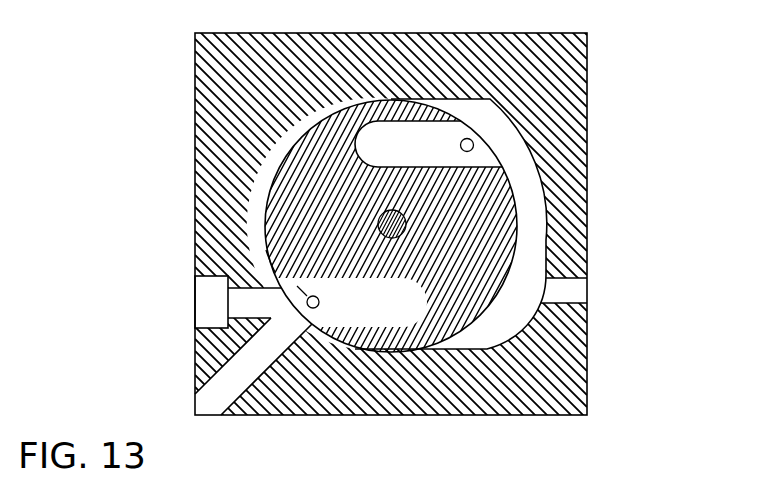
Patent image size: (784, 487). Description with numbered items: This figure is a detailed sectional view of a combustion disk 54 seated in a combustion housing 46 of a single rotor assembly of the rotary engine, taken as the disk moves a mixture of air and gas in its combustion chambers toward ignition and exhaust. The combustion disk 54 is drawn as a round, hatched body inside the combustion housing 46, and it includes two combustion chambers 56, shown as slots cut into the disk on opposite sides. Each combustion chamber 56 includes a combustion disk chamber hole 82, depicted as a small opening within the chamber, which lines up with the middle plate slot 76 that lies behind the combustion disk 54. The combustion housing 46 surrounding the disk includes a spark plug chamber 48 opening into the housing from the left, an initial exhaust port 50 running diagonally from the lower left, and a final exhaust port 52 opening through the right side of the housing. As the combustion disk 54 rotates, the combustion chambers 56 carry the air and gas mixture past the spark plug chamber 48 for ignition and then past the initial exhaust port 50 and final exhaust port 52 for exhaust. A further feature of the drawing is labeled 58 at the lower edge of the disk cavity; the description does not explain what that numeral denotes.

The combustion housing 46 is at (587, 113).
The spark plug chamber 48 is at (208, 305).
The initial exhaust port 50 is at (218, 398).
The final exhaust port 52 is at (587, 287).
The combustion disk 54 is at (492, 227).
The combustion chambers 56 is at (384, 138).
The chamber 58 is at (352, 350).
The middle plate slot 76 is at (262, 266).
The combustion disk chamber hole 82 is at (460, 147).